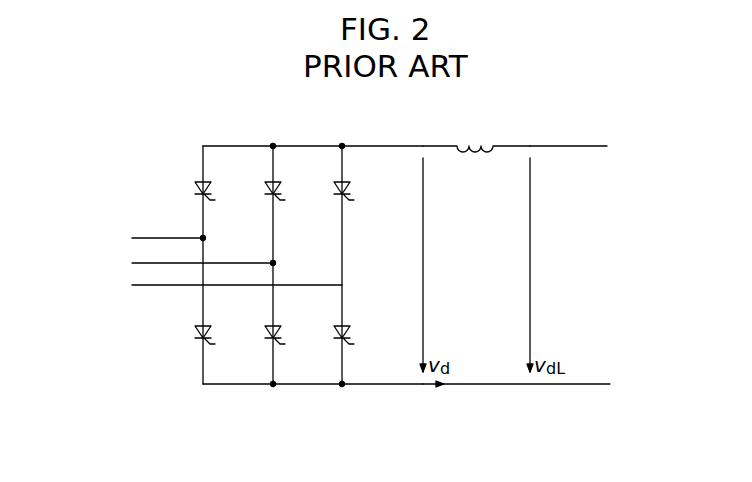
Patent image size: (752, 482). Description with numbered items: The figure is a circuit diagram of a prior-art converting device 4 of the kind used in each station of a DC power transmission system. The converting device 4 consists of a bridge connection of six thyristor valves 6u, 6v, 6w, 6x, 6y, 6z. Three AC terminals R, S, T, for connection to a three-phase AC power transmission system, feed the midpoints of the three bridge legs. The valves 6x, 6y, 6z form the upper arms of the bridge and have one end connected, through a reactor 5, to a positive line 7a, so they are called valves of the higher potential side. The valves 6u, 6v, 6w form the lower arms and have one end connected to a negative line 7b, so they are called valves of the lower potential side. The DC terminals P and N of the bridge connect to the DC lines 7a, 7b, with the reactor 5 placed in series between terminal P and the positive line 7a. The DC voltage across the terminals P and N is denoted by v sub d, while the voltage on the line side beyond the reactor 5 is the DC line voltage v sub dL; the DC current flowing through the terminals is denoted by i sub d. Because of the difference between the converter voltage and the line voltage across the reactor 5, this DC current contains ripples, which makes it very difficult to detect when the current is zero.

The converting device 4 is at (216, 138).
The reactor 5 is at (472, 143).
The thyristor valve 6x is at (211, 194).
The thyristor valve 6y is at (281, 194).
The thyristor valve 6z is at (350, 194).
The thyristor valve 6u is at (211, 338).
The thyristor valve 6v is at (281, 338).
The thyristor valve 6w is at (350, 338).
The positive line 7a is at (587, 145).
The negative line 7b is at (598, 386).